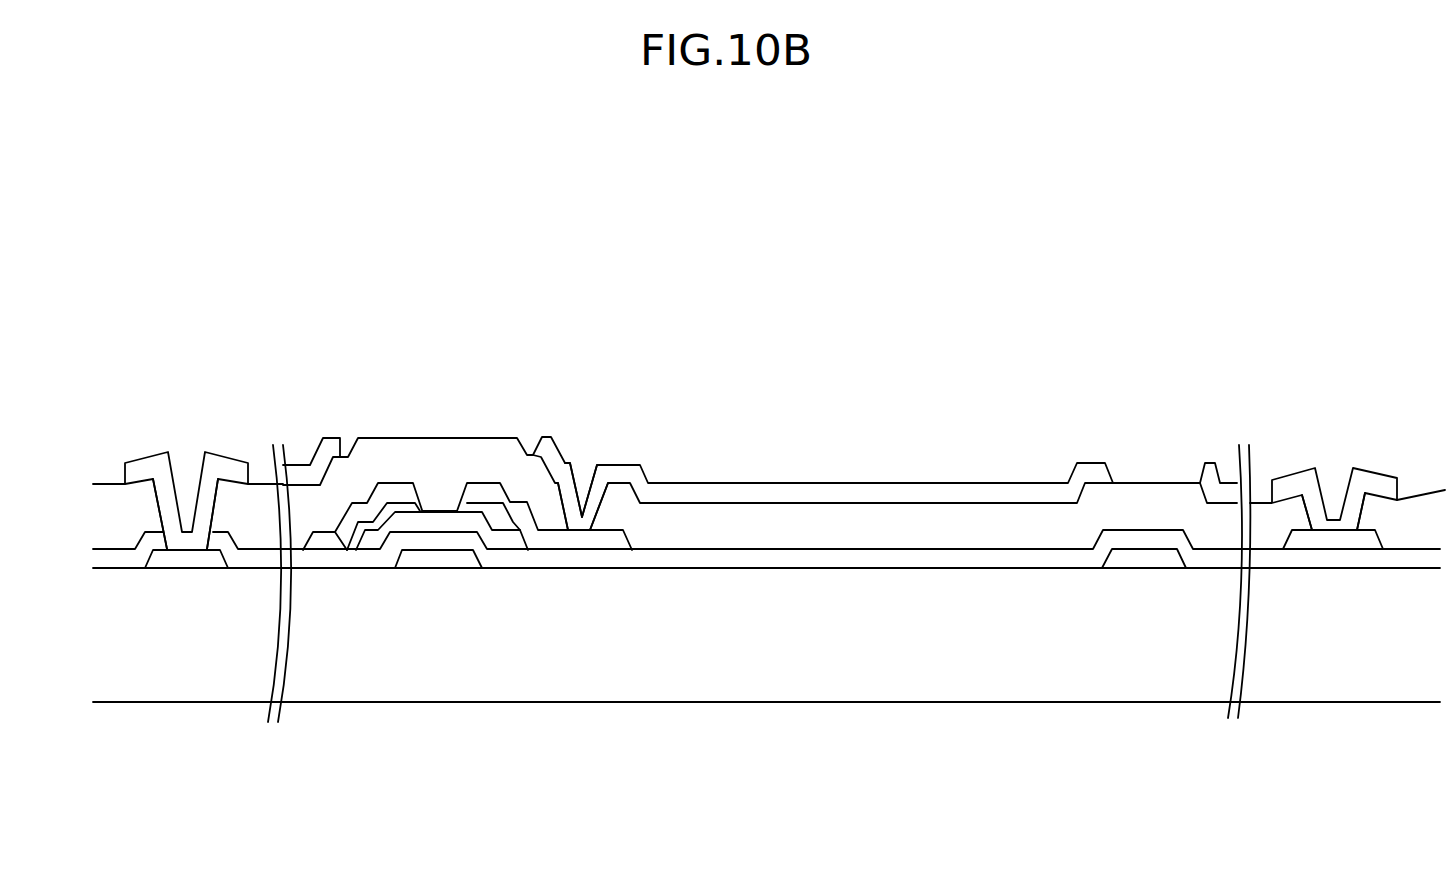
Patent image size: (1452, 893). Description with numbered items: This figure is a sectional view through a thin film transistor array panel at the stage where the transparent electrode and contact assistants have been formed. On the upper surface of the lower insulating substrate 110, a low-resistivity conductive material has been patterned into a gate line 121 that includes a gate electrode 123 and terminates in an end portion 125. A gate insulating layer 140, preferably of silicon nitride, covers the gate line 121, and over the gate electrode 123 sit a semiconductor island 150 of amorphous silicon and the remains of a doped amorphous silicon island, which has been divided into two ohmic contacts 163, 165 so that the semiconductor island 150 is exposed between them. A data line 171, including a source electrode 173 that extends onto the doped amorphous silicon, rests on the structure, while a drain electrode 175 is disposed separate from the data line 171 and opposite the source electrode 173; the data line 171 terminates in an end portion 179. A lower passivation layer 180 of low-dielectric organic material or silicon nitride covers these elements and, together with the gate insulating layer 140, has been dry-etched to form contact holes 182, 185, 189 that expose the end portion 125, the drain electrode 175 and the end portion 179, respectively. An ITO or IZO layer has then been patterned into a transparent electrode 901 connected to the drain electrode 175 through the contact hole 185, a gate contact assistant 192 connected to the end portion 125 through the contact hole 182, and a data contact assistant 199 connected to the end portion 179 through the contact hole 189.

The lower insulating substrate 110 is at (797, 680).
The gate line 121 is at (1140, 558).
The gate electrode 123 is at (445, 562).
The end portion of the gate line 125 is at (185, 558).
The gate insulating layer 140 is at (883, 556).
The semiconductor island 150 is at (497, 540).
The ohmic contact 163 is at (369, 523).
The ohmic contact 165 is at (528, 542).
The data line 171 is at (330, 537).
The source electrode 173 is at (393, 488).
The drain electrode 175 is at (570, 540).
The end portion of the data line 179 is at (1333, 538).
The lower passivation layer 180 is at (120, 533).
The contact hole 182 is at (185, 462).
The contact hole 185 is at (583, 517).
The contact hole 189 is at (1331, 483).
The gate contact assistant 192 is at (147, 462).
The data contact assistant 199 is at (1372, 483).
The transparent electrode 901 is at (955, 493).